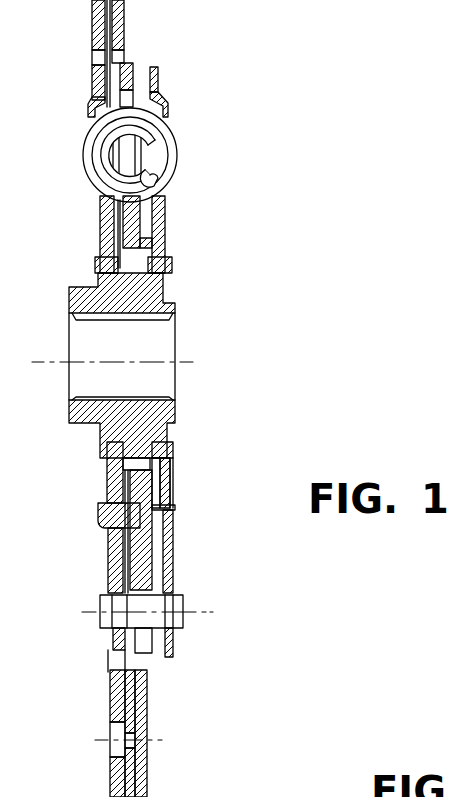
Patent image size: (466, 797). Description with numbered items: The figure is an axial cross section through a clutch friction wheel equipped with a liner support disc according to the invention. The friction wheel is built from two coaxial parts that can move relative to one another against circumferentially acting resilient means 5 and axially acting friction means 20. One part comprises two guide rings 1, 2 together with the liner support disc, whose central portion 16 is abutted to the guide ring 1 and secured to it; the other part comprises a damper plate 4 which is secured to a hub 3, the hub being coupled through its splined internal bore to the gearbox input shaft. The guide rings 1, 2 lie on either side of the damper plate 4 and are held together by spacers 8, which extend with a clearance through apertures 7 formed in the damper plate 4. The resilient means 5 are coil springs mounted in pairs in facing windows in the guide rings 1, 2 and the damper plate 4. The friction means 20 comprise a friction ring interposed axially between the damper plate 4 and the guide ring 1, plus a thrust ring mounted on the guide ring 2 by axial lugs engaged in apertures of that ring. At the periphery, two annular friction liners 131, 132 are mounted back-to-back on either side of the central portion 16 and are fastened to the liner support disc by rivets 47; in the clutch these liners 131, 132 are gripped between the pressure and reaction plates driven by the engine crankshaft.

The guide ring 1 is at (100, 202).
The guide ring 2 is at (163, 237).
The hub 3 is at (153, 316).
The damper plate 4 is at (152, 546).
The circumferentially acting resilient means 5 is at (112, 86).
The apertures 7 is at (165, 587).
The spacers 8 is at (183, 600).
The central portion 16 is at (137, 665).
The axially acting friction means 20 is at (142, 215).
The rivets 47 is at (147, 732).
The friction liner 131 is at (110, 785).
The friction liner 132 is at (147, 788).